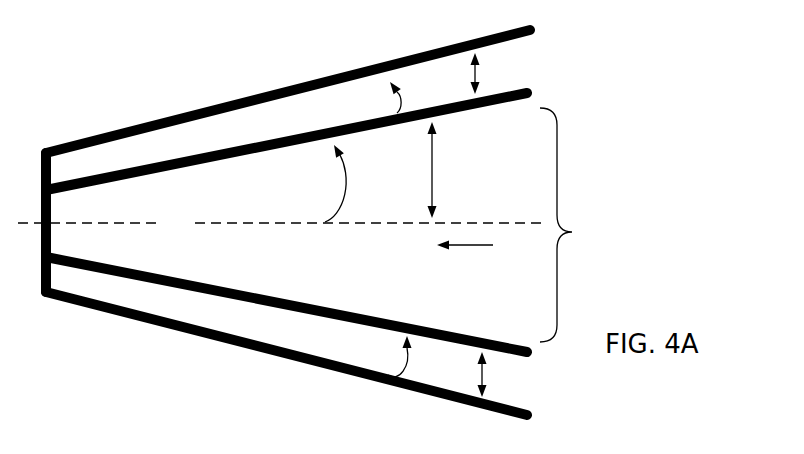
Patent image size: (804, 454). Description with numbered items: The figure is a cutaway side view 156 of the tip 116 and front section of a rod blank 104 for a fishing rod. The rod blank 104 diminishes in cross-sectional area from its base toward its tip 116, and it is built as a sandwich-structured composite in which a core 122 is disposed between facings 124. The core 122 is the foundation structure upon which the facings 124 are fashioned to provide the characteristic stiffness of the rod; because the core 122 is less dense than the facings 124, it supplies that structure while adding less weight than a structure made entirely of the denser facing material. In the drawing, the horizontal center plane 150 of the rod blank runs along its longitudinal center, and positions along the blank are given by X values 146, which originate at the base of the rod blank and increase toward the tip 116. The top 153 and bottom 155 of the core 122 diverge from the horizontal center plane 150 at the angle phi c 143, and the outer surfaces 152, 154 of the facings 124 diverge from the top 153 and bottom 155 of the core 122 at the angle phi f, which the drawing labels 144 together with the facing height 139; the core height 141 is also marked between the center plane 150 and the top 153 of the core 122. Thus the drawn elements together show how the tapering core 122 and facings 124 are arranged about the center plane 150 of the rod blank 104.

The rod blank 104 is at (203, 359).
The tip 116 is at (46, 312).
The core 122 is at (610, 248).
The facings 124 is at (230, 148).
The fin height hf 139 is at (543, 78).
The core height hc 141 is at (495, 181).
The angle phi c 143 is at (387, 193).
The length L 144 is at (435, 96).
The X values 146 is at (540, 256).
The horizontal center plane 150 is at (192, 233).
The outer surface of facing 152 is at (164, 120).
The top of the core 153 is at (230, 183).
The outer surface of facing 154 is at (148, 340).
The bottom of the core 155 is at (230, 281).
The cutaway side view 156 is at (242, 31).